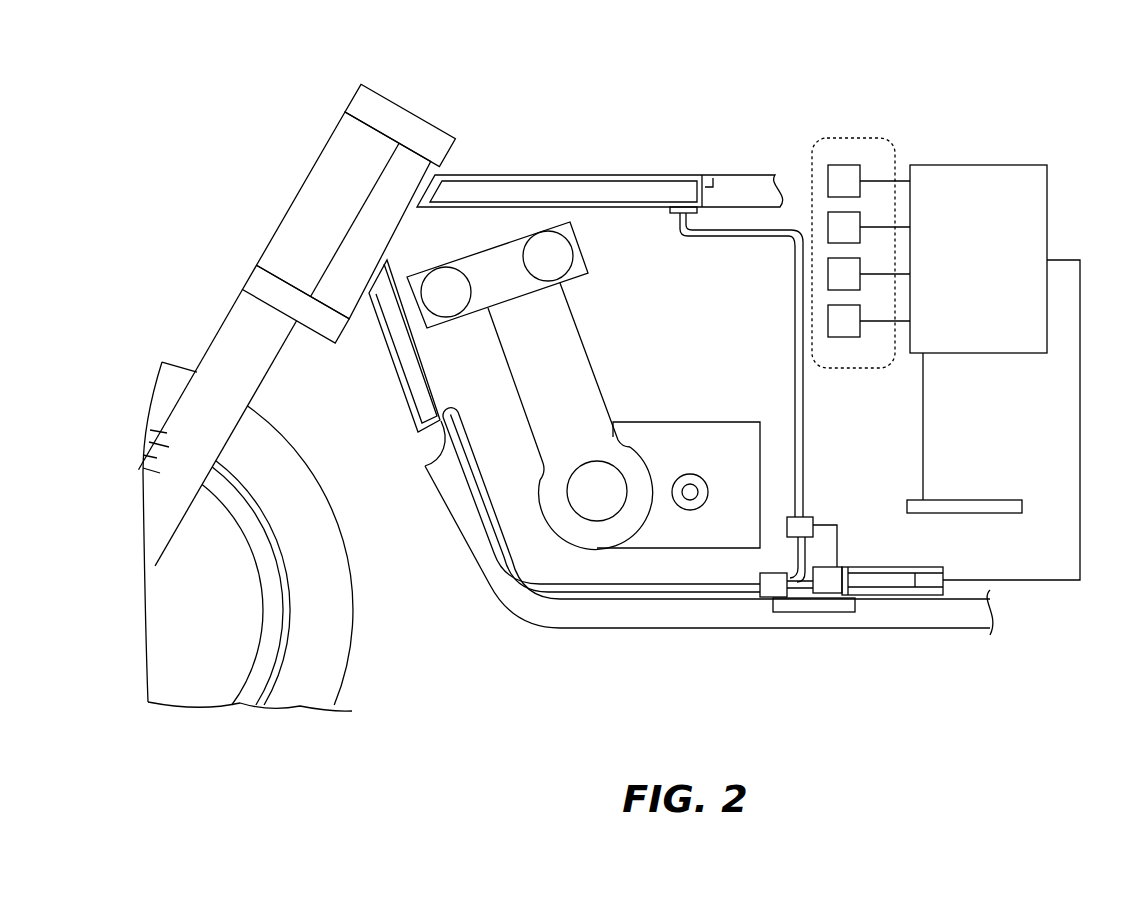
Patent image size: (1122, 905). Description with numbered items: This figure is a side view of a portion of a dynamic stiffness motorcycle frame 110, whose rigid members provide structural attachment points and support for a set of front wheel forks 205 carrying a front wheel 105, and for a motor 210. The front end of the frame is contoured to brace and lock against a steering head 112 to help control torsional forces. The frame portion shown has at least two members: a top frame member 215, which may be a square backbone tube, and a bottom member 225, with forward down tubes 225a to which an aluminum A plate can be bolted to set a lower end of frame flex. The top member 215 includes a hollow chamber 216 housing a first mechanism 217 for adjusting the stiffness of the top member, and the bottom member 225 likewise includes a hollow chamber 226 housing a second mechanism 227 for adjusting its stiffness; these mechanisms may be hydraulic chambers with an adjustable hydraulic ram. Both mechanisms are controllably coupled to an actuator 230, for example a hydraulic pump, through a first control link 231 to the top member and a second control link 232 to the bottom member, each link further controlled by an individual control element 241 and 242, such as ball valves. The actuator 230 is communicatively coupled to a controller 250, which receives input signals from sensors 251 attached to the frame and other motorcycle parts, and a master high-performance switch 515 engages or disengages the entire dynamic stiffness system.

The front wheel 105 is at (320, 725).
The motorcycle frame 110 is at (645, 235).
The steering head 112 is at (393, 192).
The front wheel forks 205 is at (290, 175).
The motor 210 is at (686, 422).
The top frame member 215 is at (624, 160).
The hollow chamber 216 is at (713, 187).
The first mechanism 217 is at (478, 188).
The bottom member 225 is at (900, 650).
The forward down tubes 225a is at (484, 560).
The hollow chamber 226 is at (425, 466).
The second mechanism 227 is at (405, 343).
The actuator 230 is at (903, 567).
The first control link 231 is at (806, 430).
The second control link 232 is at (638, 584).
The control element 241 is at (814, 517).
The control element 242 is at (764, 585).
The controller 250 is at (1000, 308).
The sensors 251 is at (878, 110).
The master high-performance switch 515 is at (950, 500).